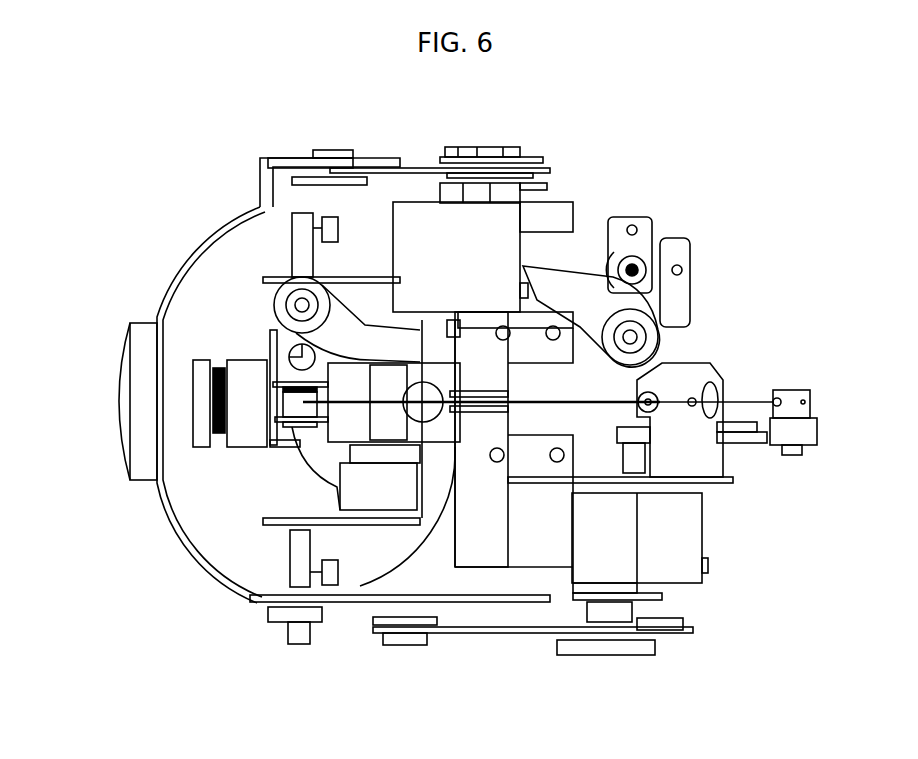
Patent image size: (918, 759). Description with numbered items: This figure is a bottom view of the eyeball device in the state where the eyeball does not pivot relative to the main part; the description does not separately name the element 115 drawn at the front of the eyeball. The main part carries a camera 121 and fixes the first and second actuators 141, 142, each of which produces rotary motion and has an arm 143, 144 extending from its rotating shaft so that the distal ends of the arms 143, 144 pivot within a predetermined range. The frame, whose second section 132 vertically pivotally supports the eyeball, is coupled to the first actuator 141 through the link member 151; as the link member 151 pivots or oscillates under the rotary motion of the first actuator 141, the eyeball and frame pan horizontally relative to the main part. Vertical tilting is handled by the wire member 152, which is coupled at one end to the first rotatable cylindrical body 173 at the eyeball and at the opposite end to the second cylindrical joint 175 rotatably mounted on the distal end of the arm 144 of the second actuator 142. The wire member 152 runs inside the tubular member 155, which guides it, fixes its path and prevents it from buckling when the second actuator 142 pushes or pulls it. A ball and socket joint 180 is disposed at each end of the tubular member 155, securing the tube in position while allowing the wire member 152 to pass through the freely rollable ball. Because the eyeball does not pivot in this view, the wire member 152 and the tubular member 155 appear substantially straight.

The lens 115 is at (147, 396).
The camera 121 is at (245, 372).
The second section 132 is at (362, 535).
The first actuator 141 is at (692, 540).
The second actuator 142 is at (692, 296).
The arm 143 is at (748, 440).
The arm 144 is at (645, 232).
The link member 151 is at (580, 285).
The wire member 152 is at (305, 415).
The tubular member 155 is at (480, 402).
The first rotatable cylindrical body 173 is at (280, 408).
The second cylindrical joint 175 is at (795, 391).
The ball and socket joint 180 is at (410, 388).